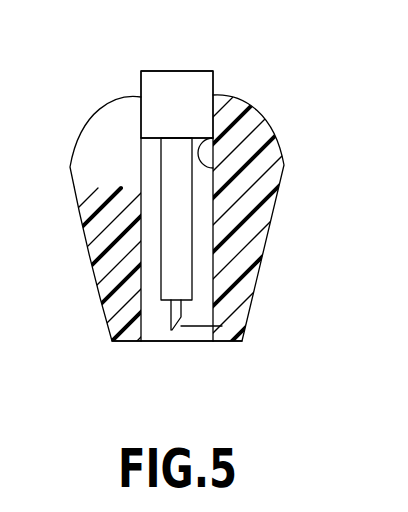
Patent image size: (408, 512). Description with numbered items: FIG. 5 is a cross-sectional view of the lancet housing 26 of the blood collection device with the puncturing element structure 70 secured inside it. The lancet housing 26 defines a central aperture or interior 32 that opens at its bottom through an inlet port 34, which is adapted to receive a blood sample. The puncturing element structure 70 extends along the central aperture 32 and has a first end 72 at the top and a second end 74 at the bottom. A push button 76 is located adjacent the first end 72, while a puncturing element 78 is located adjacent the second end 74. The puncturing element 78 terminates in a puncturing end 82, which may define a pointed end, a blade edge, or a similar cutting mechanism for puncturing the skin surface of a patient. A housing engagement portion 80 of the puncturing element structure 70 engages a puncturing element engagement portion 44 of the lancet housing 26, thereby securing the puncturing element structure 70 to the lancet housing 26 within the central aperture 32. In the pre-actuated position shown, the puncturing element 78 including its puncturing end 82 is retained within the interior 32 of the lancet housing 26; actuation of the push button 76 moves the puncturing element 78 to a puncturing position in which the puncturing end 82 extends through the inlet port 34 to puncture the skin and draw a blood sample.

The lancet housing 26 is at (93, 110).
The first end 72 is at (158, 68).
The push button 76 is at (187, 90).
The housing engagement portion 80 is at (213, 173).
The puncturing element engagement portion 44 is at (215, 157).
The puncturing element structure 70 is at (172, 224).
The puncturing element 78 is at (181, 326).
The puncturing end 82 is at (181, 326).
The central aperture 32 is at (151, 304).
The second end 74 is at (172, 346).
The inlet port 34 is at (200, 345).